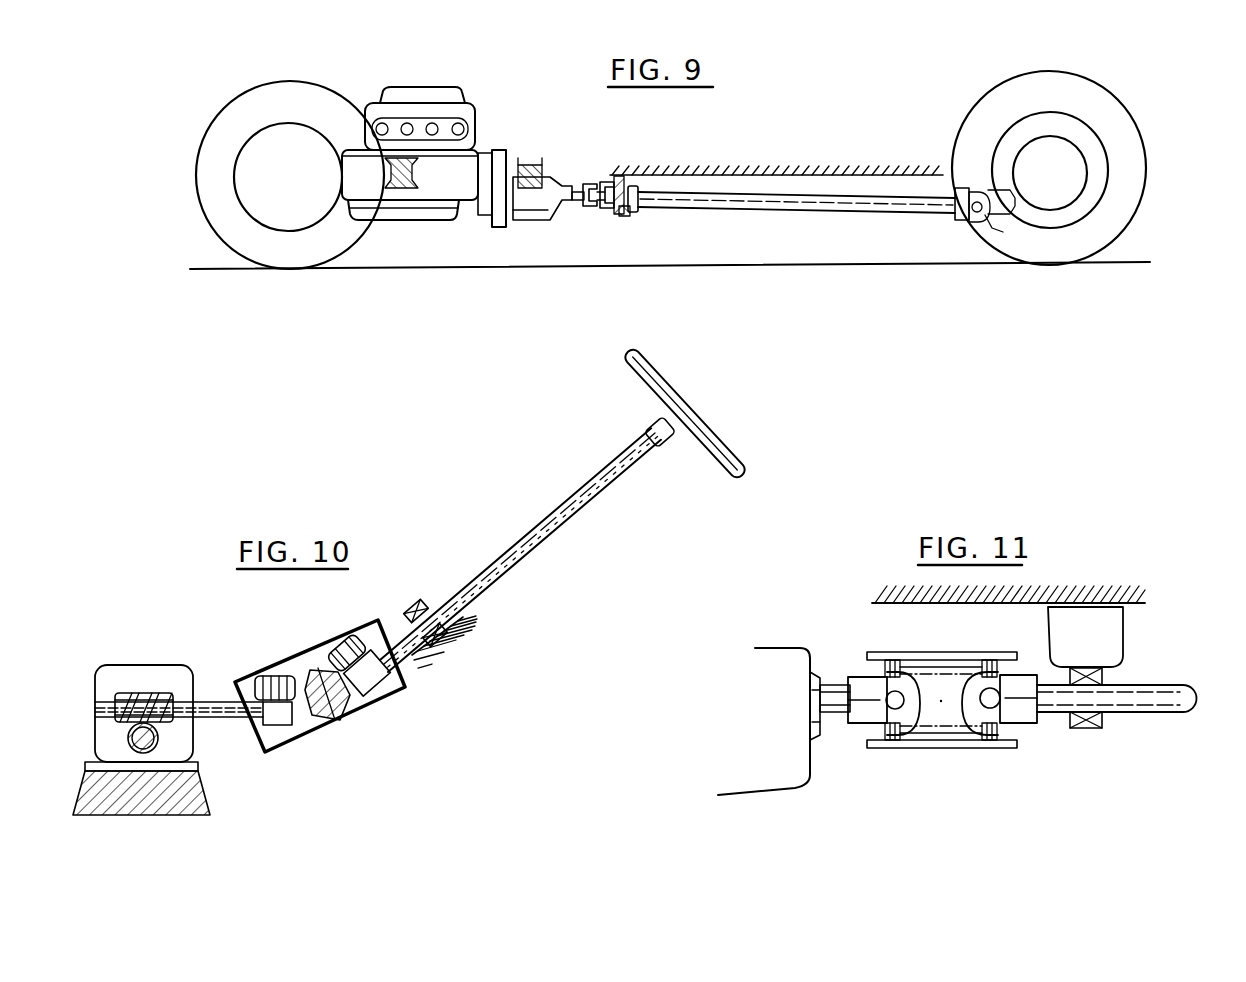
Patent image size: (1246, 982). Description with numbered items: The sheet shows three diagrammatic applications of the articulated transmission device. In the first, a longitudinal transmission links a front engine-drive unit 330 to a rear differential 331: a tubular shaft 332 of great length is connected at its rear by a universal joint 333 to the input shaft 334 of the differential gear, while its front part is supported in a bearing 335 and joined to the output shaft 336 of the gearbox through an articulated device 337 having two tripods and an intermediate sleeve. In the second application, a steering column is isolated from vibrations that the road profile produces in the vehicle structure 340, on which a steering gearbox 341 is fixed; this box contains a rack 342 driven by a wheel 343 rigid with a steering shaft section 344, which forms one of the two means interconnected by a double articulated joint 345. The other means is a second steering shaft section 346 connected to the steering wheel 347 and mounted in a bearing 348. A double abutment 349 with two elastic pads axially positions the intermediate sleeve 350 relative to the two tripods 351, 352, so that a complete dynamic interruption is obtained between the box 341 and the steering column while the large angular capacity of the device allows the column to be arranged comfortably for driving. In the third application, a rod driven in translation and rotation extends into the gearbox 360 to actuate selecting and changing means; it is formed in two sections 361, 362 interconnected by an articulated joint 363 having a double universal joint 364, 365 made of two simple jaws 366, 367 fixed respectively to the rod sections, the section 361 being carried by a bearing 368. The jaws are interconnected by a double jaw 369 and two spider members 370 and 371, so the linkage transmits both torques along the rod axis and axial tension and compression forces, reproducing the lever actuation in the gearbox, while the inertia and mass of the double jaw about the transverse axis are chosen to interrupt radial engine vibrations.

In FIG. 9, the engine-drive unit 330 is at (467, 118).
In FIG. 9, the rear differential 331 is at (1049, 168).
In FIG. 9, the tubular shaft 332 is at (787, 202).
In FIG. 9, the universal joint 333 is at (968, 220).
In FIG. 9, the input shaft 334 is at (990, 222).
In FIG. 9, the bearing 335 is at (630, 216).
In FIG. 9, the output shaft 336 is at (583, 182).
In FIG. 9, the articulated device 337 is at (617, 182).
In FIG. 10, the vehicle structure 340 is at (180, 796).
In FIG. 10, the steering gearbox 341 is at (118, 672).
In FIG. 10, the rack 342 is at (128, 740).
In FIG. 10, the wheel 343 is at (150, 698).
In FIG. 10, the steering shaft section 344 is at (220, 718).
In FIG. 10, the double articulated joint 345 is at (352, 728).
In FIG. 10, the second steering shaft section 346 is at (512, 548).
In FIG. 10, the steering wheel 347 is at (663, 398).
In FIG. 10, the bearing 348 is at (414, 600).
In FIG. 10, the double abutment 349 is at (320, 686).
In FIG. 10, the intermediate sleeve 350 is at (258, 678).
In FIG. 10, the tripod 351 is at (279, 728).
In FIG. 10, the tripod 352 is at (376, 680).
In FIG. 11, the gearbox 360 is at (784, 662).
In FIG. 11, the rod section 361 is at (1057, 700).
In FIG. 11, the rod section 362 is at (832, 690).
In FIG. 11, the articulated joint 363 is at (934, 751).
In FIG. 11, the universal joint 364 is at (1015, 728).
In FIG. 11, the universal joint 365 is at (858, 728).
In FIG. 11, the simple jaw 366 is at (978, 710).
In FIG. 11, the simple jaw 367 is at (865, 686).
In FIG. 11, the bearing 368 is at (1100, 724).
In FIG. 11, the double jaw 369 is at (950, 655).
In FIG. 11, the spider member 370 is at (994, 697).
In FIG. 11, the spider member 371 is at (904, 668).